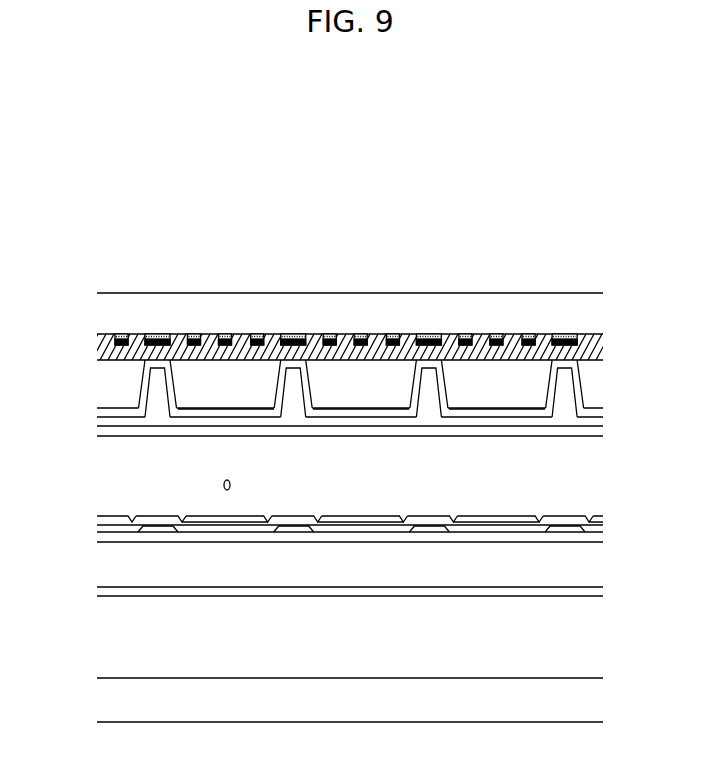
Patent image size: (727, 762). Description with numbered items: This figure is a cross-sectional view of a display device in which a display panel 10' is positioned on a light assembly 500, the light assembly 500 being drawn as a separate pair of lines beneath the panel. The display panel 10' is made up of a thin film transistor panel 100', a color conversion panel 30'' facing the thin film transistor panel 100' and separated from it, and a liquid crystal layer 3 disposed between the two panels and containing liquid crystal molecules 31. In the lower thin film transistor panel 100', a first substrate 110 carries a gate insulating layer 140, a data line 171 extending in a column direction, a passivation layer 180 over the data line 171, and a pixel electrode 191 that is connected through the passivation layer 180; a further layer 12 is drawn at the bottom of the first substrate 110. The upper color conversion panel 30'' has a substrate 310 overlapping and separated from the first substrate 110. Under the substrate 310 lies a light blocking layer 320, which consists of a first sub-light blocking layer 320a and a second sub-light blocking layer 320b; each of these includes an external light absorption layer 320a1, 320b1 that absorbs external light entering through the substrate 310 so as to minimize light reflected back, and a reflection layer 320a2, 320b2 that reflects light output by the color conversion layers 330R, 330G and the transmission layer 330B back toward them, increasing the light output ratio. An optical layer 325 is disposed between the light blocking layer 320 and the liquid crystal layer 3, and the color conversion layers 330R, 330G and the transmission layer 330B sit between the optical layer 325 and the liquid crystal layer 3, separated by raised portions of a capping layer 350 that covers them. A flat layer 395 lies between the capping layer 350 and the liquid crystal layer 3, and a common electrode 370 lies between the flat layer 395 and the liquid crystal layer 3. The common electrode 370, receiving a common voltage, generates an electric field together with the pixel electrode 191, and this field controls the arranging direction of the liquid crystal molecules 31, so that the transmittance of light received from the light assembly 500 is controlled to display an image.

The substrate 310 is at (136, 305).
The optical layer 325 is at (181, 350).
The light blocking layer 320 is at (346, 275).
The first sub-light blocking layer 320a is at (329, 289).
The second sub-light blocking layer 320b is at (361, 289).
The external light absorption layer 320a1 is at (499, 338).
The reflection layer 320a2 is at (489, 338).
The external light absorption layer 320b1 is at (436, 338).
The reflection layer 320b2 is at (419, 338).
The color conversion layer 330R is at (230, 377).
The color conversion layer 330G is at (348, 378).
The transmission layer 330B is at (526, 375).
The capping layer 350 is at (294, 362).
The flat layer 395 is at (108, 424).
The common electrode 370 is at (562, 432).
The color conversion panel 30'' is at (620, 365).
The liquid crystal layer 3 is at (603, 437).
The thin film transistor panel 100' is at (624, 552).
The display panel 10' is at (42, 451).
The liquid crystal molecule 31 is at (231, 485).
The pixel electrode 191 is at (356, 515).
The passivation layer 180 is at (243, 528).
The data line 171 is at (160, 528).
The gate insulating layer 140 is at (205, 537).
The first substrate 110 is at (515, 575).
The polarizer 12 is at (562, 590).
The light assembly 500 is at (590, 700).